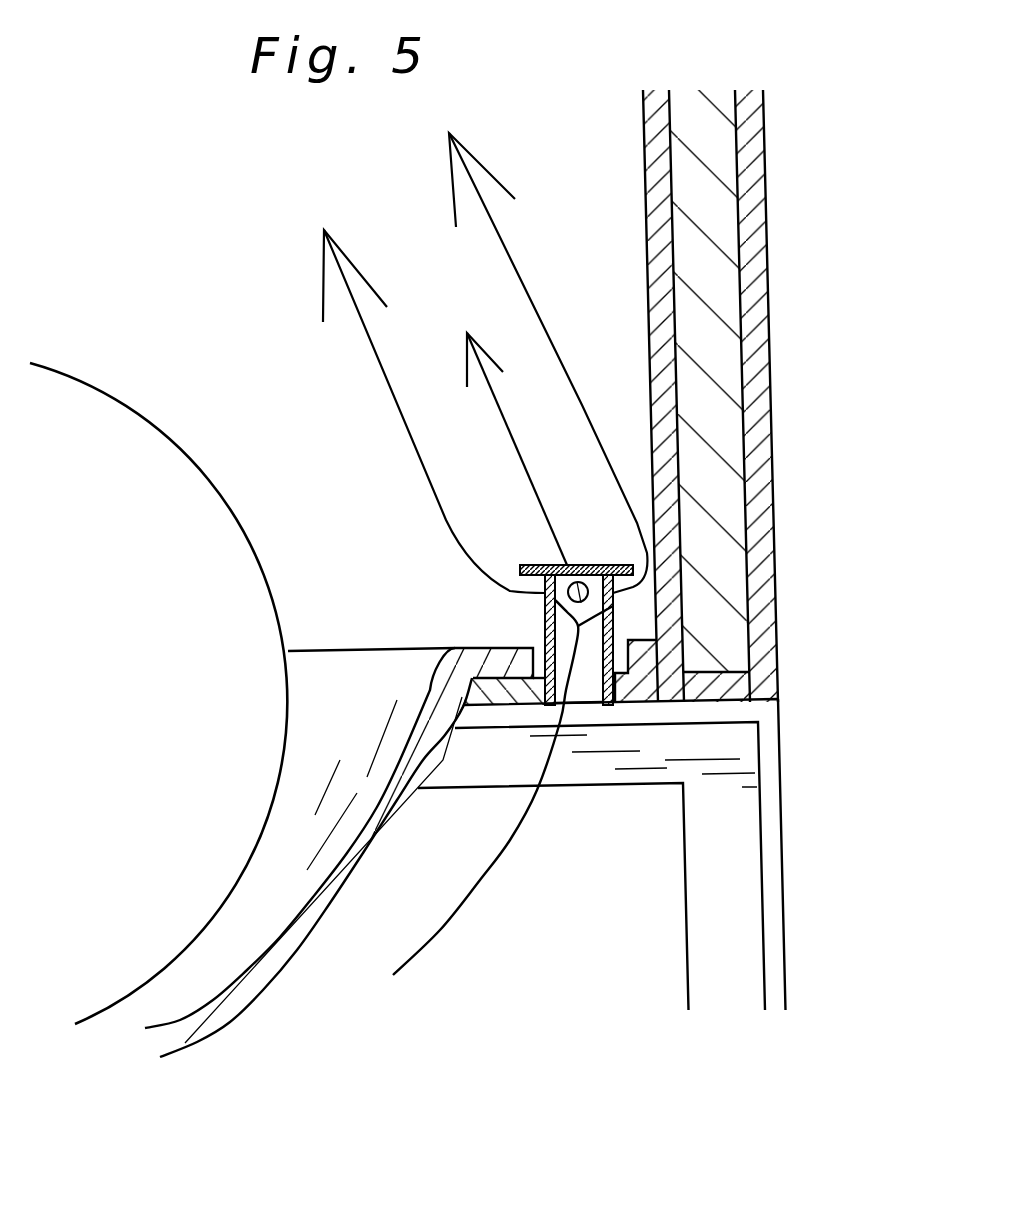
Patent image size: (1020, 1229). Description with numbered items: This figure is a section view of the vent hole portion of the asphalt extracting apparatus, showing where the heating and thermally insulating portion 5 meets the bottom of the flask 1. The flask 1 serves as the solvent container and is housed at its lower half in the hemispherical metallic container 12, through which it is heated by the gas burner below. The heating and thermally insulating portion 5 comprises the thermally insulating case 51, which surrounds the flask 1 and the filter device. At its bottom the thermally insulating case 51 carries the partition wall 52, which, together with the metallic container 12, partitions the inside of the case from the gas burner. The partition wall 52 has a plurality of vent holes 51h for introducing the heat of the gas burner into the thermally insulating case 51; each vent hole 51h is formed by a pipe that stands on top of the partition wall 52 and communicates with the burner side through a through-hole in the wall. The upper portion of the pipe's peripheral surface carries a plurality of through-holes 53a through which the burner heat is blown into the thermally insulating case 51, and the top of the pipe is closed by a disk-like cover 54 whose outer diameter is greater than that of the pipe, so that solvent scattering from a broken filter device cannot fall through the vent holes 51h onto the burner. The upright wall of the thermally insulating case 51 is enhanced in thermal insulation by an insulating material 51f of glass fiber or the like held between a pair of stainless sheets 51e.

The flask 1 is at (153, 513).
The metallic container 12 is at (255, 990).
The heating and thermally insulating portion 5 is at (701, 360).
The thermally insulating case 51 is at (701, 360).
The stainless sheets 51e is at (650, 157).
The insulating material 51f is at (712, 113).
The vent hole 51h is at (592, 685).
The partition wall 52 is at (647, 688).
The through-holes 53a is at (588, 565).
The cover 54 is at (522, 565).